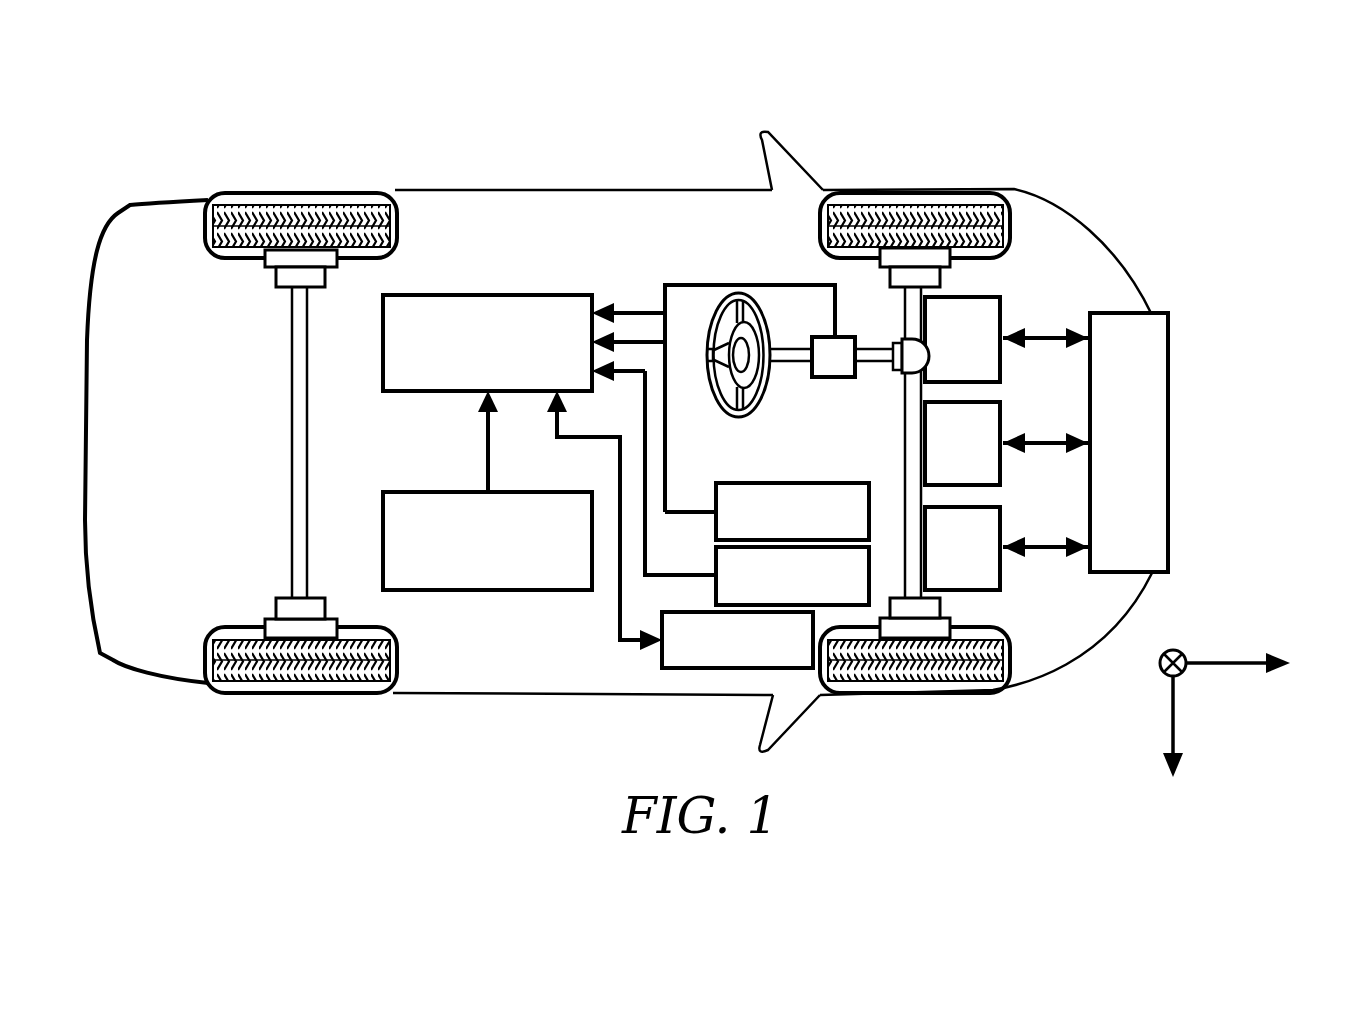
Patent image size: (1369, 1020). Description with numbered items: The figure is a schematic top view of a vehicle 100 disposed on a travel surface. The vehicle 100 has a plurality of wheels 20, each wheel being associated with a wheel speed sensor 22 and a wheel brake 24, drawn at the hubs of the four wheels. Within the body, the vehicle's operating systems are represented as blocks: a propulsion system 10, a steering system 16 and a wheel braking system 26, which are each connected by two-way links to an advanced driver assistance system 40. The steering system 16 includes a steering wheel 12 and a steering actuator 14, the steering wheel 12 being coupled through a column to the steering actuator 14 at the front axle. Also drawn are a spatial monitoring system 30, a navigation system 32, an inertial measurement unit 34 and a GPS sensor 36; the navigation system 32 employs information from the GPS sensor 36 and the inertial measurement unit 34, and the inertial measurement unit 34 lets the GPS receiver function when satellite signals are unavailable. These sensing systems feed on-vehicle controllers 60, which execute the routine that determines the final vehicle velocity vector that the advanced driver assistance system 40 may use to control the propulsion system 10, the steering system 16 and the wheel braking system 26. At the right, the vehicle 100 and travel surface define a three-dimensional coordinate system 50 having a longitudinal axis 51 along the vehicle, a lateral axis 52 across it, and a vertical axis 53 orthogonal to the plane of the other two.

The vehicle 100 is at (830, 112).
The wheels 20 is at (248, 193).
The wheel speed sensors 22 is at (277, 275).
The wheel brakes 24 is at (262, 262).
The propulsion system 10 is at (990, 339).
The steering wheel 12 is at (742, 417).
The steering actuator 14 is at (835, 377).
The steering system 16 is at (1006, 443).
The wheel braking system 26 is at (1006, 548).
The spatial monitoring system 30 is at (487, 490).
The navigation system 32 is at (737, 640).
The inertial measurement unit 34 is at (792, 511).
The GPS sensor 36 is at (792, 576).
The advanced driver assistance system 40 is at (1129, 442).
The on-vehicle controllers 60 is at (487, 343).
The three-dimensional coordinate system 50 is at (1243, 714).
The longitudinal axis 51 is at (1257, 667).
The lateral axis 52 is at (1176, 742).
The vertical axis 53 is at (1176, 647).